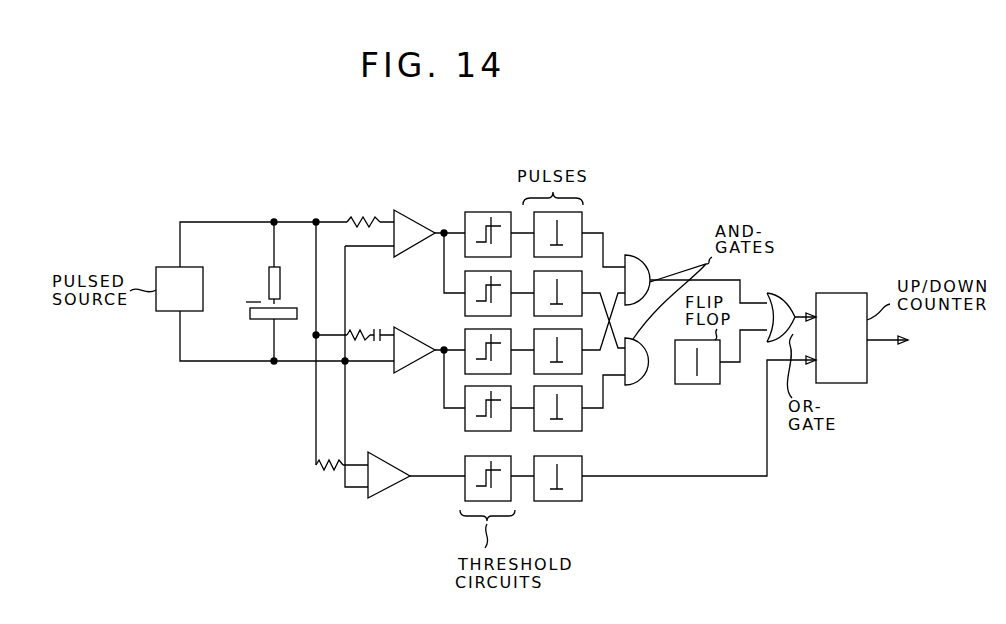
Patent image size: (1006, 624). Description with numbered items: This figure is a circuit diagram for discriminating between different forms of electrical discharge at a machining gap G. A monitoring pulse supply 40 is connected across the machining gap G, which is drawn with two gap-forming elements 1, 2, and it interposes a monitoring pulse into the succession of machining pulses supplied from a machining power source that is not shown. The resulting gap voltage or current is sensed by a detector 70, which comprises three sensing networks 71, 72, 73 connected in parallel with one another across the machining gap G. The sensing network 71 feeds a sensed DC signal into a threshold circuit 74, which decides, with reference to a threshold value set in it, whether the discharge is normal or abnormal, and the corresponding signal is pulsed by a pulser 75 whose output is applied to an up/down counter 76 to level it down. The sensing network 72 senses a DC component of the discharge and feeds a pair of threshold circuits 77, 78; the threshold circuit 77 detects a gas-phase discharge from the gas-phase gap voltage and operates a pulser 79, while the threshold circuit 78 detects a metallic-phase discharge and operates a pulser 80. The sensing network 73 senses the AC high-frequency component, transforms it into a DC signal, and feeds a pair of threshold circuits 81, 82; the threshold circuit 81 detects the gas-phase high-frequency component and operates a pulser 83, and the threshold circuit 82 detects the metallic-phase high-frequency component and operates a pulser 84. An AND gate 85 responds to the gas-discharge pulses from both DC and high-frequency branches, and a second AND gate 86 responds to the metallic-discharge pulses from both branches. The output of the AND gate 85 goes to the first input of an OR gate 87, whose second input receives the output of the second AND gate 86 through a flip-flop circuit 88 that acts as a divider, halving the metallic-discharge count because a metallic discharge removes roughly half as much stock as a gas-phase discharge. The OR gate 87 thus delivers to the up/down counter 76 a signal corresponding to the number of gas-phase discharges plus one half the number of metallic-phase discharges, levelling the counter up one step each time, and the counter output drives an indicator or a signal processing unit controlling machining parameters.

The first electrode (resistor) 1 is at (268, 278).
The second electrode (plate) 2 is at (258, 321).
The machining gap G is at (253, 291).
The monitoring pulse supply 40 is at (166, 312).
The detector 70 is at (390, 402).
The sensing network 71 is at (388, 456).
The sensing network 72 is at (392, 214).
The sensing network 73 is at (388, 326).
The threshold circuit 74 is at (462, 490).
The pulser 75 is at (568, 501).
The up/down counter 76 is at (850, 293).
The threshold circuit 77 is at (493, 212).
The threshold circuit 78 is at (465, 298).
The pulser 79 is at (582, 220).
The pulser 80 is at (582, 272).
The threshold circuit 81 is at (464, 360).
The threshold circuit 82 is at (465, 418).
The pulser 83 is at (585, 376).
The pulser 84 is at (585, 426).
The AND gate 85 is at (652, 270).
The second AND gate 86 is at (635, 338).
The OR gate 87 is at (785, 292).
The flip-flop circuit 88 is at (705, 384).